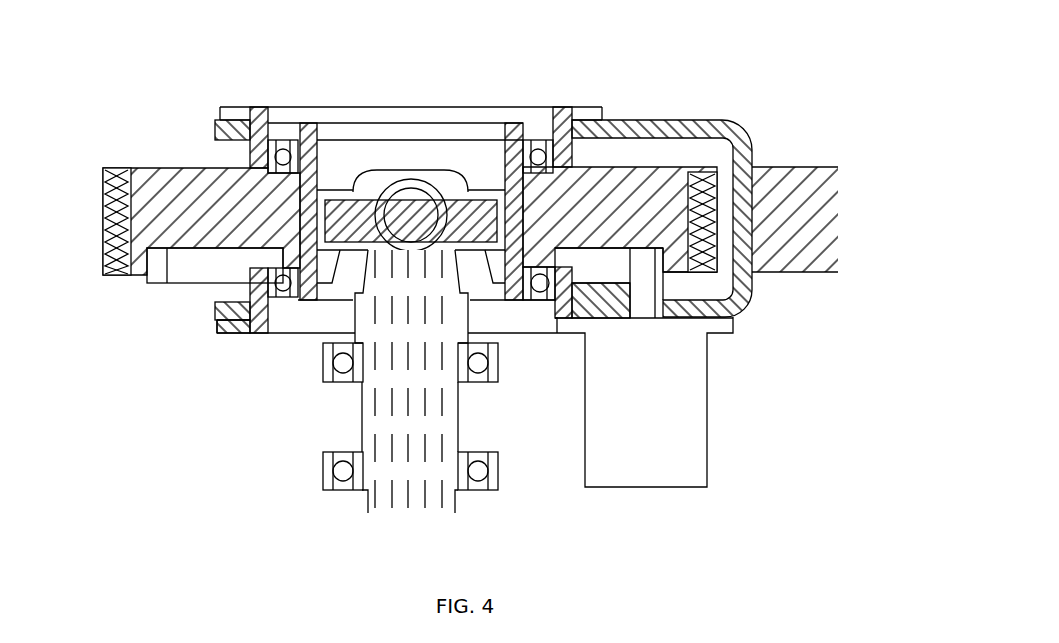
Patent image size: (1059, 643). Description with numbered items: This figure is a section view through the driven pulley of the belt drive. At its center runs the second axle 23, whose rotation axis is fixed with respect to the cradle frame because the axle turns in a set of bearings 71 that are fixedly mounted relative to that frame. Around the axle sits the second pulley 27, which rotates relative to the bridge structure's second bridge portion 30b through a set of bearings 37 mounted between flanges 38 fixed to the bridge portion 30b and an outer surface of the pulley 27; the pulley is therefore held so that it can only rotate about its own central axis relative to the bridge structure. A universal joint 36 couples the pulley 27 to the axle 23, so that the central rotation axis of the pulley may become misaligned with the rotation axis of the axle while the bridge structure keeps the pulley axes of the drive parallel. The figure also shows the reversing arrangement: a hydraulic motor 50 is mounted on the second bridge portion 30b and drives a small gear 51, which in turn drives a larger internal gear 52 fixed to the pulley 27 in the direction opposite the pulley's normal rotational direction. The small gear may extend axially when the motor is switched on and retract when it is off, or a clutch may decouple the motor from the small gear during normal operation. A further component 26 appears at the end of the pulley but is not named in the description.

The second axle 23 is at (437, 400).
The spring 26 is at (103, 187).
The second pulley 27 is at (195, 185).
The second bridge portion 30b is at (693, 118).
The universal joint 36 is at (418, 208).
The bearings 37 is at (538, 157).
The flanges 38 is at (250, 108).
The hydraulic motor 50 is at (677, 410).
The small gear 51 is at (647, 272).
The internal gear 52 is at (205, 272).
The bearings 71 is at (343, 358).